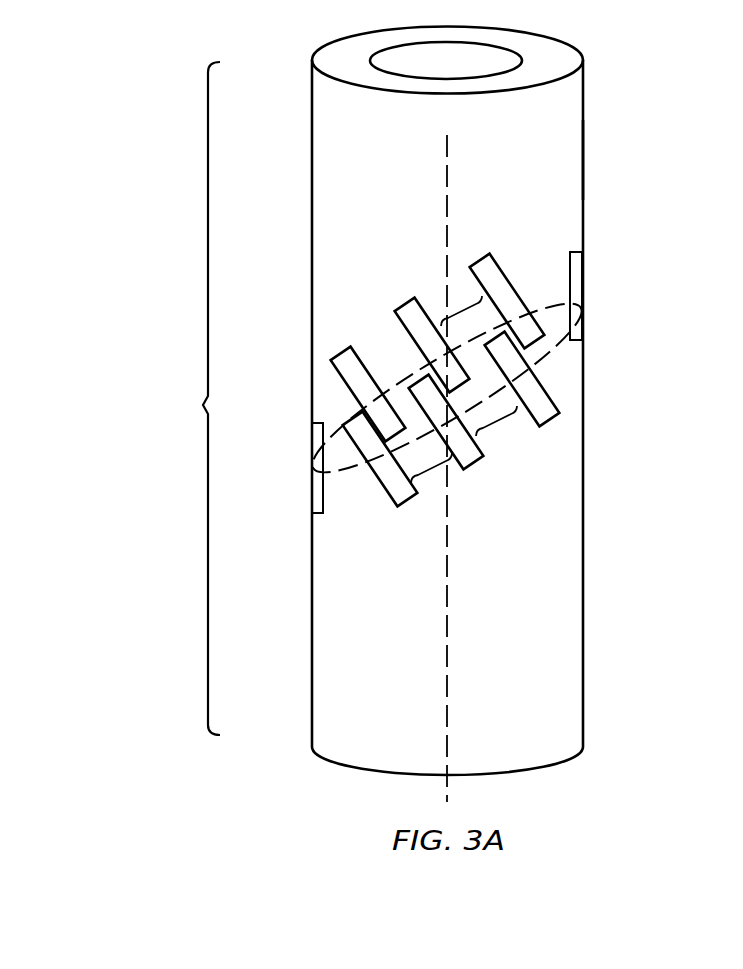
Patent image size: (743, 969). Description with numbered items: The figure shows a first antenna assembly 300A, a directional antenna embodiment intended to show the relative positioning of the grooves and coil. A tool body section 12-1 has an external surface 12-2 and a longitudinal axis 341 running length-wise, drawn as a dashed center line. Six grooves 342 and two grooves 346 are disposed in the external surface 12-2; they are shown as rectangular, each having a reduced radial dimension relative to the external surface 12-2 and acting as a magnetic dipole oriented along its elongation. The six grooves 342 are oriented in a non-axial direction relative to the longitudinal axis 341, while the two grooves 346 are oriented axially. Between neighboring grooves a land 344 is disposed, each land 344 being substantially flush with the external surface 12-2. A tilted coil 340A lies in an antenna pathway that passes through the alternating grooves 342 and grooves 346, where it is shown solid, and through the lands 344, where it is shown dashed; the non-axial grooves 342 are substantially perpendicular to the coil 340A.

The first antenna assembly 300A is at (609, 76).
The tool body section 12-1 is at (202, 405).
The external surface 12-2 is at (582, 157).
The longitudinal axis 341 is at (447, 662).
The tilted coil 340A is at (550, 352).
The grooves 342 is at (487, 252).
The land 344 is at (460, 307).
The grooves 346 is at (577, 268).